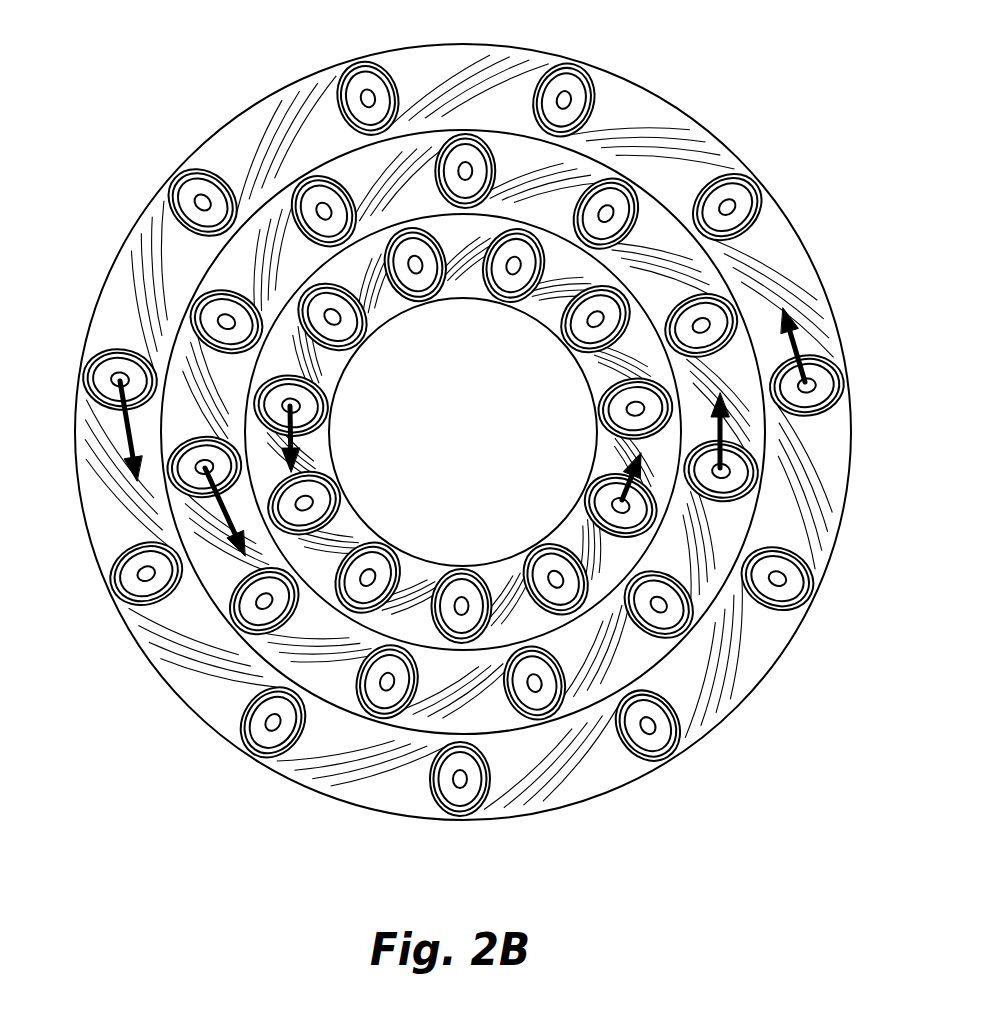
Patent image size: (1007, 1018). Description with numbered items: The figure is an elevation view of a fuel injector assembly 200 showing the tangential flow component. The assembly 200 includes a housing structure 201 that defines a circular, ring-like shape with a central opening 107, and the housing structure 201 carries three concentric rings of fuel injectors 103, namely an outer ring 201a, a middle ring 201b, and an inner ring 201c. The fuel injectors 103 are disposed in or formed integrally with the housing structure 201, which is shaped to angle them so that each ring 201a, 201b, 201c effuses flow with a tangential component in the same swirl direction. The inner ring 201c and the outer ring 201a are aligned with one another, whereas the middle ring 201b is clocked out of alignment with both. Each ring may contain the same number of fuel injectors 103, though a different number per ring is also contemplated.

The assembly 200 is at (232, 29).
The housing structure 201 is at (118, 250).
The outer ring 201a is at (660, 127).
The middle ring 201b is at (545, 185).
The inner ring 201c is at (335, 548).
The fuel injector 103 is at (348, 323).
The central opening 107 is at (455, 507).